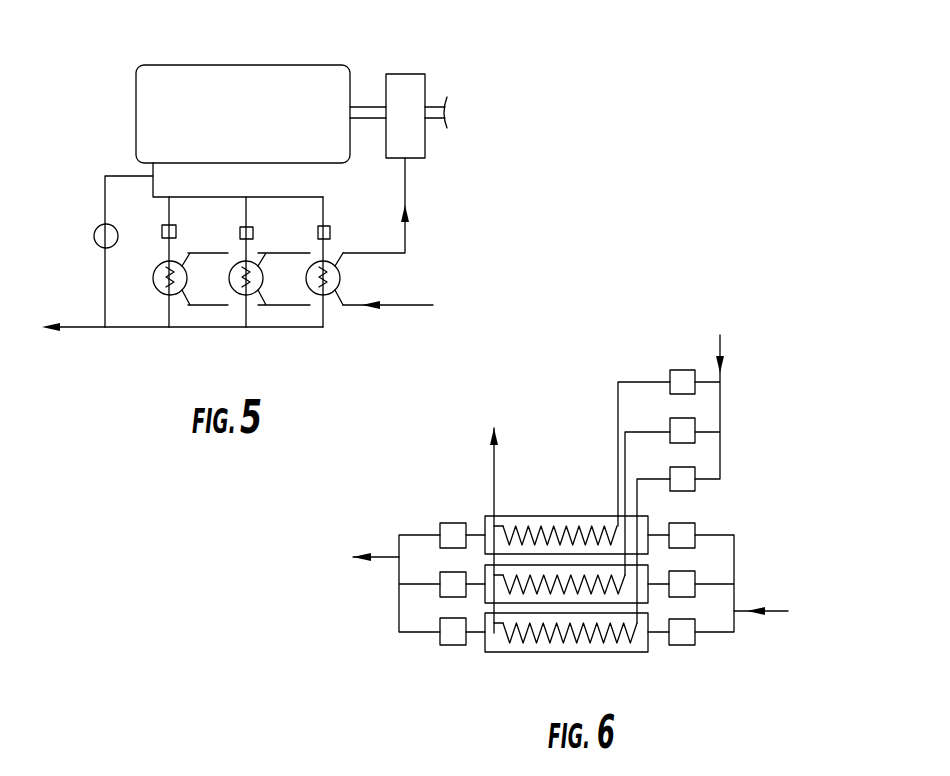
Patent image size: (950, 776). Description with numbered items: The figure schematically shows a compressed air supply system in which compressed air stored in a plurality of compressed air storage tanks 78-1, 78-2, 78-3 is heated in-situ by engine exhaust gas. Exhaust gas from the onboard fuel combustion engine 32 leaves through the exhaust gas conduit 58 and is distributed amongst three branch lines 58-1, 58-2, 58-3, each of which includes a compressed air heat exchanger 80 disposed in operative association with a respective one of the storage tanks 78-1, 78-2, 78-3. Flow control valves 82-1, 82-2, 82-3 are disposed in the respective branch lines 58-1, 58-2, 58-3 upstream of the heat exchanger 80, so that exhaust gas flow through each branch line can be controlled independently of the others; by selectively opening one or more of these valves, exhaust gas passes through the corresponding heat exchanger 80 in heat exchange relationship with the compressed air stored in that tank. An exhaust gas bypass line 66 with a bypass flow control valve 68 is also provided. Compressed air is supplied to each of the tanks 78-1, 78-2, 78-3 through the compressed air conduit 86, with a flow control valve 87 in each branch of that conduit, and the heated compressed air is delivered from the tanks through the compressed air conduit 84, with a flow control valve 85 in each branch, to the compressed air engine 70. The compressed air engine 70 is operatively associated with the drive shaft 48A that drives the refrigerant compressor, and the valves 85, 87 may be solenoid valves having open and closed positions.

In FIG. 5, the fuel combustion engine 32 is at (265, 65).
In FIG. 5, the compressed air engine 70 is at (407, 74).
In FIG. 5, the drive shaft 48A is at (437, 95).
In FIG. 5, the exhaust gas bypass line 66 is at (105, 195).
In FIG. 5, the bypass flow control valve 68 is at (96, 245).
In FIG. 5, the exhaust gas conduit 58 is at (153, 190).
In FIG. 6, the exhaust gas conduit 58 is at (720, 402).
In FIG. 5, the first exhaust branch line 58-1 is at (168, 216).
In FIG. 6, the first exhaust branch line 58-1 is at (618, 403).
In FIG. 5, the second exhaust branch line 58-2 is at (246, 202).
In FIG. 6, the second exhaust branch line 58-2 is at (625, 450).
In FIG. 5, the third exhaust branch line 58-3 is at (323, 213).
In FIG. 6, the third exhaust branch line 58-3 is at (637, 495).
In FIG. 5, the first flow control valve 82-1 is at (177, 232).
In FIG. 6, the first flow control valve 82-1 is at (686, 370).
In FIG. 5, the second flow control valve 82-2 is at (254, 232).
In FIG. 6, the second flow control valve 82-2 is at (686, 418).
In FIG. 5, the third flow control valve 82-3 is at (367, 208).
In FIG. 6, the third flow control valve 82-3 is at (697, 485).
In FIG. 5, the compressed air conduit 84 is at (412, 240).
In FIG. 6, the compressed air conduit 84 is at (377, 563).
In FIG. 5, the first compressed air storage tank 78-1 is at (165, 294).
In FIG. 6, the first compressed air storage tank 78-1 is at (508, 516).
In FIG. 5, the second compressed air storage tank 78-2 is at (240, 297).
In FIG. 6, the second compressed air storage tank 78-2 is at (573, 565).
In FIG. 5, the third compressed air storage tank 78-3 is at (341, 282).
In FIG. 6, the third compressed air storage tank 78-3 is at (565, 653).
In FIG. 5, the compressed air heat exchanger 80 is at (158, 270).
In FIG. 6, the compressed air heat exchanger 80 is at (532, 532).
In FIG. 5, the compressed air conduit 86 is at (395, 307).
In FIG. 6, the compressed air conduit 86 is at (770, 612).
In FIG. 6, the flow control valve 85 is at (452, 523).
In FIG. 6, the flow control valve 87 is at (697, 524).